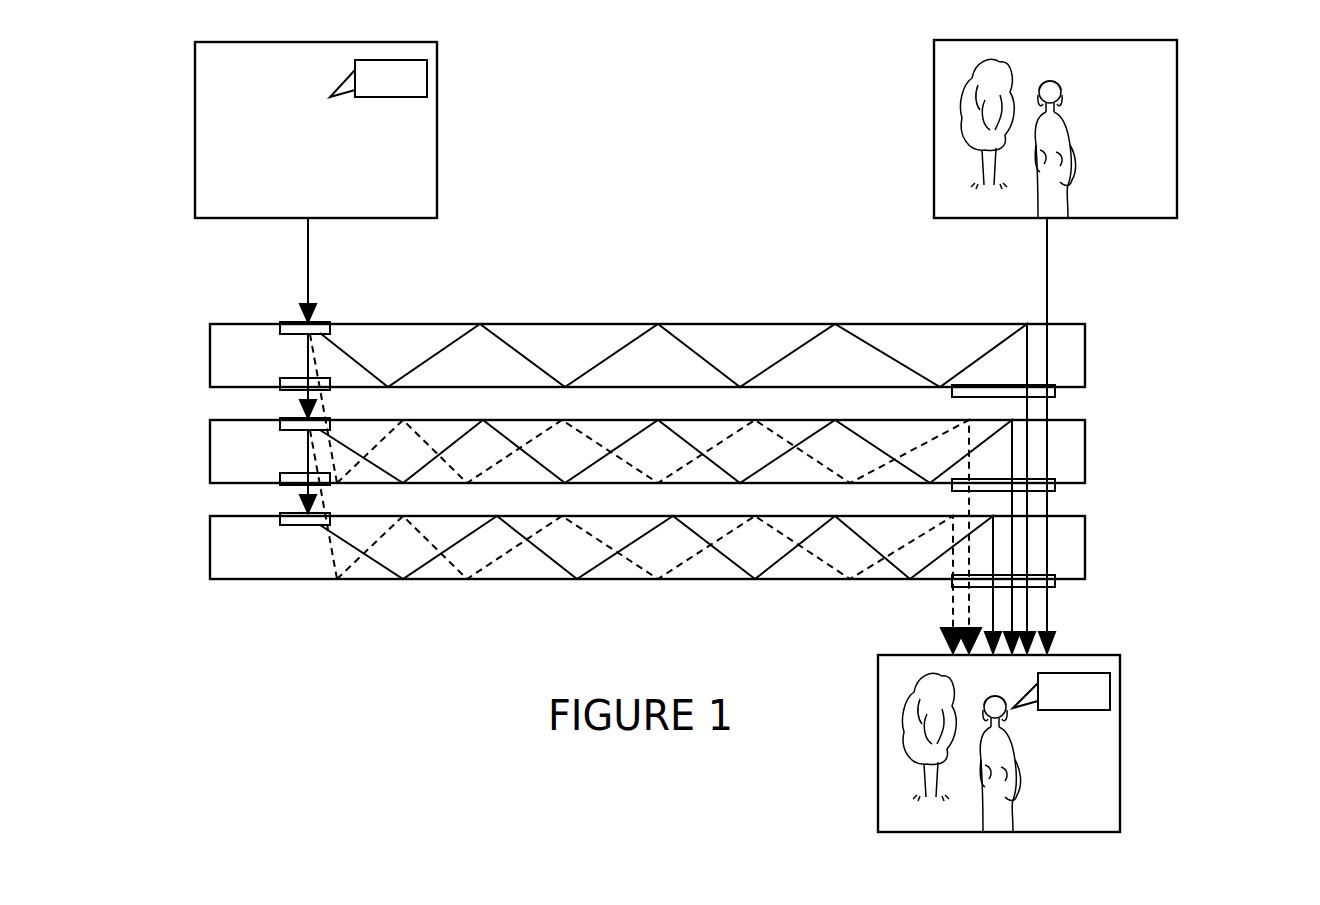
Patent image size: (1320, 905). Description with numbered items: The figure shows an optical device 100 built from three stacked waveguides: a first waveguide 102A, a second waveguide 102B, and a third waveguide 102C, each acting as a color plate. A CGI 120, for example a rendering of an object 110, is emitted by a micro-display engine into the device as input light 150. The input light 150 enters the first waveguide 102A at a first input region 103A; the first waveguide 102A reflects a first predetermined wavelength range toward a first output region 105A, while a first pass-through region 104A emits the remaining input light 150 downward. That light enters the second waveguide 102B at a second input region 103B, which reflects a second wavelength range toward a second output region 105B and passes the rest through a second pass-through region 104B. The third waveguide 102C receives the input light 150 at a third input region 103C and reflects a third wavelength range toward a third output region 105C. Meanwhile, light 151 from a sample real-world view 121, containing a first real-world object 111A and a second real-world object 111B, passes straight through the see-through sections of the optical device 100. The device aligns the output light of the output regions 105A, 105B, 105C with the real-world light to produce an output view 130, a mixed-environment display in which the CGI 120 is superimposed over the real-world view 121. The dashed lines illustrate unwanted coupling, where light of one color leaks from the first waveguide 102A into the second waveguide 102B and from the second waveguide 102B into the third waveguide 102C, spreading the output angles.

The optical device 100 is at (1178, 471).
The first waveguide 102A is at (210, 358).
The second waveguide 102B is at (210, 453).
The third waveguide 102C is at (210, 548).
The first input region 103A is at (288, 326).
The second input region 103B is at (288, 422).
The third input region 103C is at (288, 517).
The first pass-through region 104A is at (318, 388).
The second pass-through region 104B is at (318, 483).
The first output region 105A is at (1055, 393).
The second output region 105B is at (1055, 488).
The third output region 105C is at (1055, 583).
The object 110 is at (427, 86).
The first real-world object 111A is at (965, 100).
The second real-world object 111B is at (1043, 190).
The CGI 120 is at (428, 197).
The real-world view 121 is at (1172, 138).
The output view 130 is at (1118, 790).
The input light 150 is at (303, 282).
The light from real-world view 151 is at (1045, 295).